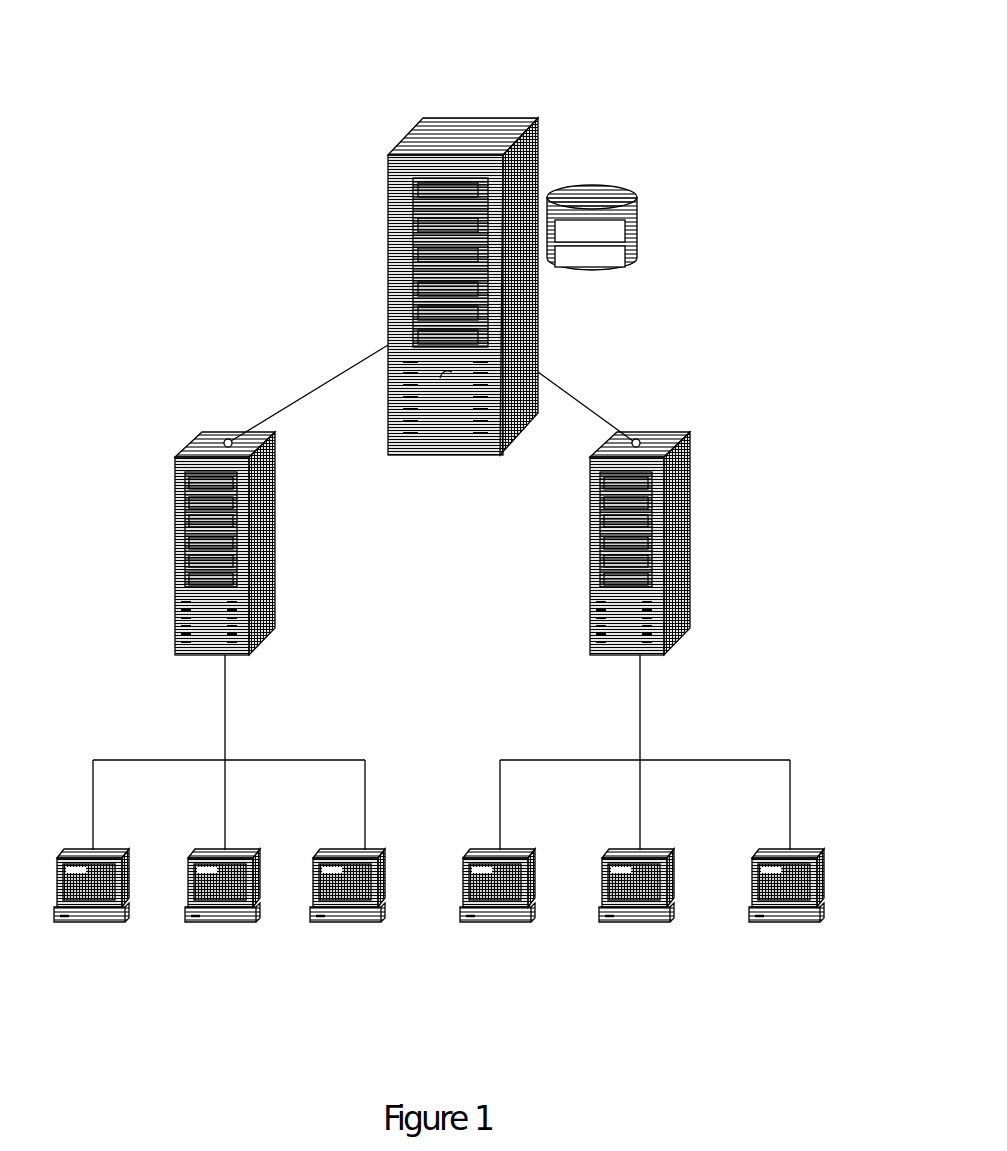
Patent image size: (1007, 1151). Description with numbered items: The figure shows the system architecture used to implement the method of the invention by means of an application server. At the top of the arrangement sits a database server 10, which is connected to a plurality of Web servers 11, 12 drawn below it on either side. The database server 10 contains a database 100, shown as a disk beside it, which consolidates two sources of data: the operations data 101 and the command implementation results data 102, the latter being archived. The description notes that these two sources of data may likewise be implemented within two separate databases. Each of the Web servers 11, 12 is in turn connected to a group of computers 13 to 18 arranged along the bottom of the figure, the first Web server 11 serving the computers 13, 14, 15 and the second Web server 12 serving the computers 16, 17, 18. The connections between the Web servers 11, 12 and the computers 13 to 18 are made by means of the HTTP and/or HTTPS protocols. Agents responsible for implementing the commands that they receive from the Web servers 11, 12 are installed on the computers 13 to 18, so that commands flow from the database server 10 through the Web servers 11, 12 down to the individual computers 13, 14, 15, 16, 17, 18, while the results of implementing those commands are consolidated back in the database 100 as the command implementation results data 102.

The database server 10 is at (453, 118).
The database 100 is at (639, 175).
The operations data 101 is at (598, 221).
The command implementation results data 102 is at (590, 268).
The Web server 11 is at (215, 432).
The Web server 12 is at (663, 432).
The computer 13 is at (88, 925).
The computer 14 is at (222, 925).
The computer 15 is at (351, 925).
The computer 16 is at (498, 925).
The computer 17 is at (640, 925).
The computer 18 is at (790, 925).